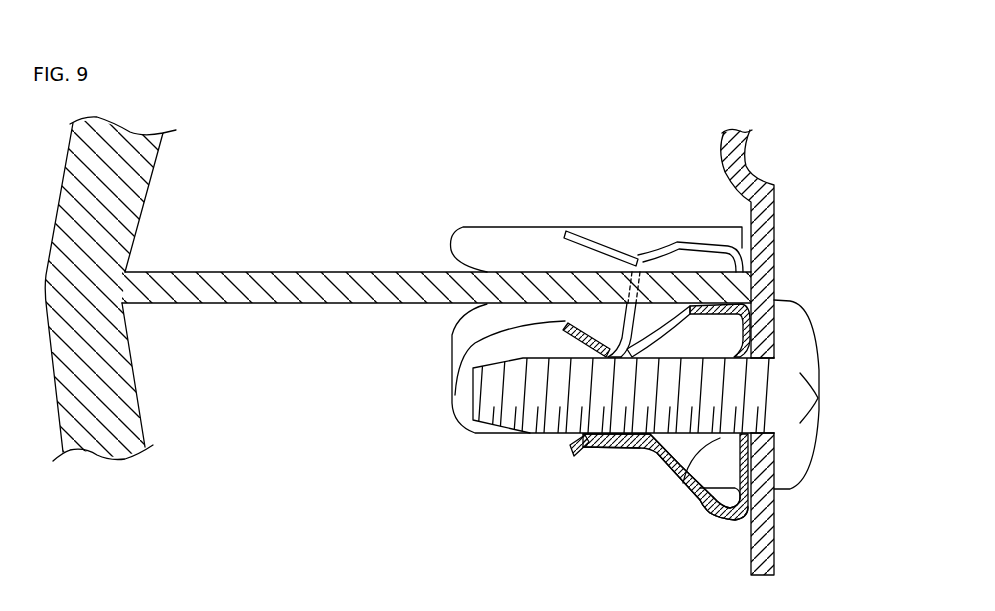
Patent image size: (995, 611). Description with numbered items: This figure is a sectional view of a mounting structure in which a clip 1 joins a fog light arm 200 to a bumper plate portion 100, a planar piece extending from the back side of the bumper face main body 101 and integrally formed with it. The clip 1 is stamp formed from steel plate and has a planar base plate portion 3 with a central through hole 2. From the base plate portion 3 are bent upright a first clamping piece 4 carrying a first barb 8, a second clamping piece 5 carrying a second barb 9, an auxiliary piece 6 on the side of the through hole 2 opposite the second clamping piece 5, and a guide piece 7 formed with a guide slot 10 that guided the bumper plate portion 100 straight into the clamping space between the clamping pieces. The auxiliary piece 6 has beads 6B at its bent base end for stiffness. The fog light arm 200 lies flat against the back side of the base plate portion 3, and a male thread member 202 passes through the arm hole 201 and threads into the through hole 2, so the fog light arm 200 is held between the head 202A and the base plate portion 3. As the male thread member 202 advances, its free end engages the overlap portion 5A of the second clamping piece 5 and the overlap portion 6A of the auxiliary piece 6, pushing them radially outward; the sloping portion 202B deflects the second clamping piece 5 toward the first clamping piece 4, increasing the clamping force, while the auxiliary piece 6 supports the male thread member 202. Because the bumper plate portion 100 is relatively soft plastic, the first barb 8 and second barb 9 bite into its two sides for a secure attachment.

The clip 1 is at (513, 158).
The through hole 2 is at (688, 473).
The base plate portion 3 is at (731, 492).
The first clamping piece 4 is at (678, 244).
The second clamping piece 5 is at (500, 332).
The overlap portion 5A is at (608, 356).
The auxiliary piece 6 is at (660, 447).
The overlap portion 6A is at (632, 446).
The beads 6B is at (707, 520).
The guide piece 7 is at (481, 234).
The first barb 8 is at (629, 262).
The second barb 9 is at (490, 306).
The guide slot 10 is at (546, 278).
The bumper plate portion 100 is at (276, 271).
The bumper face main body 101 is at (133, 179).
The fog light arm 200 is at (718, 152).
The arm hole 201 is at (777, 372).
The male thread member 202 is at (577, 452).
The head 202A is at (793, 482).
The sloping portion 202B is at (497, 427).